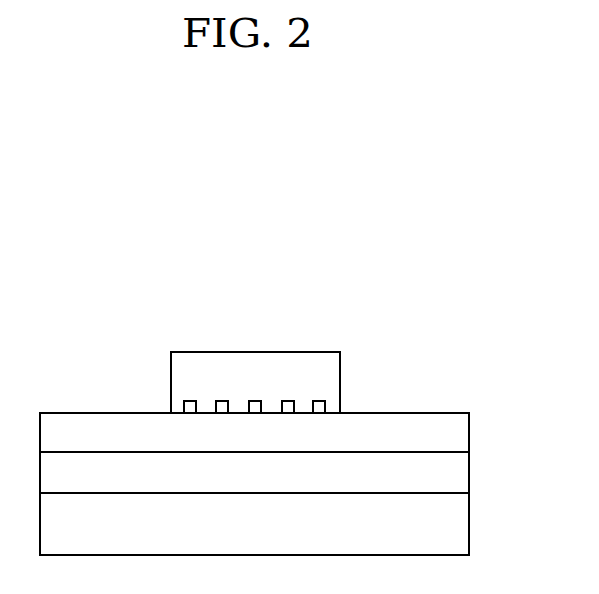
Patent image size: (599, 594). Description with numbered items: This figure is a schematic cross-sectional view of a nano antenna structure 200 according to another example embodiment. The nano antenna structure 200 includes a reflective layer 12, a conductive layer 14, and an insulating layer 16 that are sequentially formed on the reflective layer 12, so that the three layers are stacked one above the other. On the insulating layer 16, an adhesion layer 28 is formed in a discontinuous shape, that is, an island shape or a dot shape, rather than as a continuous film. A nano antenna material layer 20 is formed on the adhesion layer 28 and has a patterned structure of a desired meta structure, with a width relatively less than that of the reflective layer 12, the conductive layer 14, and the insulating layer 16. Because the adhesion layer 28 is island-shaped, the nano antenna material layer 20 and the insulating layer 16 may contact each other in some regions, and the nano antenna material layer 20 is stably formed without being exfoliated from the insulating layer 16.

The nano antenna structure 200 is at (463, 268).
The reflective layer 12 is at (460, 527).
The conductive layer 14 is at (460, 472).
The insulating layer 16 is at (460, 434).
The nano antenna material layer 20 is at (211, 360).
The adhesion layer 28 is at (287, 405).